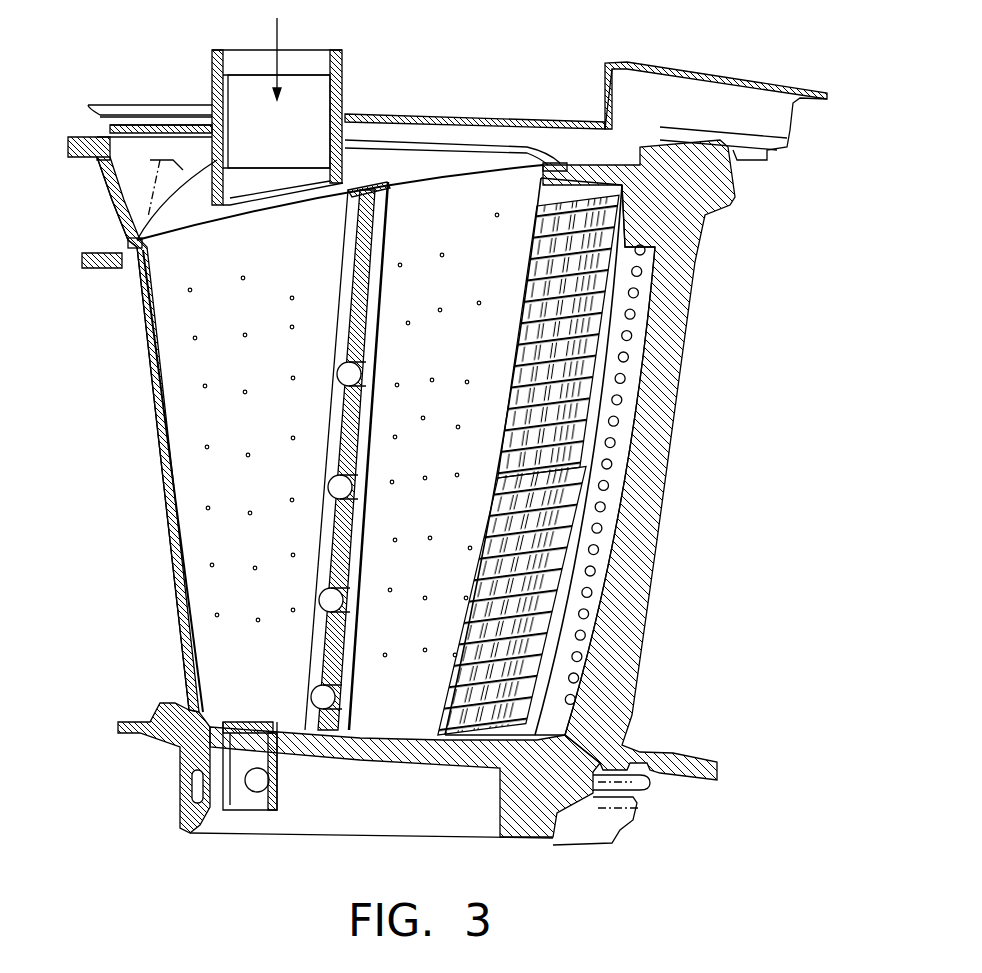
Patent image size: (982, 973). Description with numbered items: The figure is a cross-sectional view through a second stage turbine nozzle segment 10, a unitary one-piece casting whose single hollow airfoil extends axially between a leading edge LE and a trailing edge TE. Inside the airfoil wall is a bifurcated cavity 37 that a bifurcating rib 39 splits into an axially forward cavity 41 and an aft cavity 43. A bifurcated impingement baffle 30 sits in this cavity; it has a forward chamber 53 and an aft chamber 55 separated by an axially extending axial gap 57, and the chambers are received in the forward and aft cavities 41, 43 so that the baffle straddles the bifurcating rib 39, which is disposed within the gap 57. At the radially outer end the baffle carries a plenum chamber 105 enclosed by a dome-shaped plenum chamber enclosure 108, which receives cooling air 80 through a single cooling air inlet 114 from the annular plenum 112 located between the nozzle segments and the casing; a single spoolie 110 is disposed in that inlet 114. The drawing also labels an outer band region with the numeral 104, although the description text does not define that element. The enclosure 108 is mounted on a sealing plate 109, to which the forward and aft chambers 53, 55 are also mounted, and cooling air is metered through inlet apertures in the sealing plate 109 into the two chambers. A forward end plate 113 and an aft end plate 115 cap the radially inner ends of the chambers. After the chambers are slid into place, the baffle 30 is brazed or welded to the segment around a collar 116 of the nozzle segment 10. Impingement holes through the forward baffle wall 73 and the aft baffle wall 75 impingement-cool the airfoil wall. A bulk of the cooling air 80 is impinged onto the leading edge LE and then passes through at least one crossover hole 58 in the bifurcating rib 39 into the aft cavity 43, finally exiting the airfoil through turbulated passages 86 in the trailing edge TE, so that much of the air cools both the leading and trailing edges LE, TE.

The nozzle segment 10 is at (158, 800).
The bifurcated impingement baffle 30 is at (395, 140).
The bifurcated cavity 37 is at (500, 152).
The bifurcating rib 39 is at (373, 253).
The forward cavity 41 is at (183, 597).
The aft cavity 43 is at (382, 210).
The forward chamber 53 is at (165, 377).
The aft chamber 55 is at (373, 460).
The axial gap 57 is at (363, 375).
The crossover hole 58 is at (342, 598).
The forward baffle wall 73 is at (243, 440).
The aft baffle wall 75 is at (466, 335).
The cooling air 80 is at (282, 30).
The turbulated passages 86 is at (603, 317).
The outer band cover 104 is at (458, 112).
The plenum chamber 105 is at (160, 220).
The plenum chamber enclosure 108 is at (152, 188).
The sealing plate 109 is at (140, 243).
The spoolie 110 is at (348, 116).
The annular plenum 112 is at (521, 31).
The forward end plate 113 is at (210, 713).
The cooling air inlet 114 is at (190, 168).
The aft end plate 115 is at (360, 722).
The collar 116 is at (128, 243).
The leading edge LE is at (160, 493).
The trailing edge TE is at (660, 510).